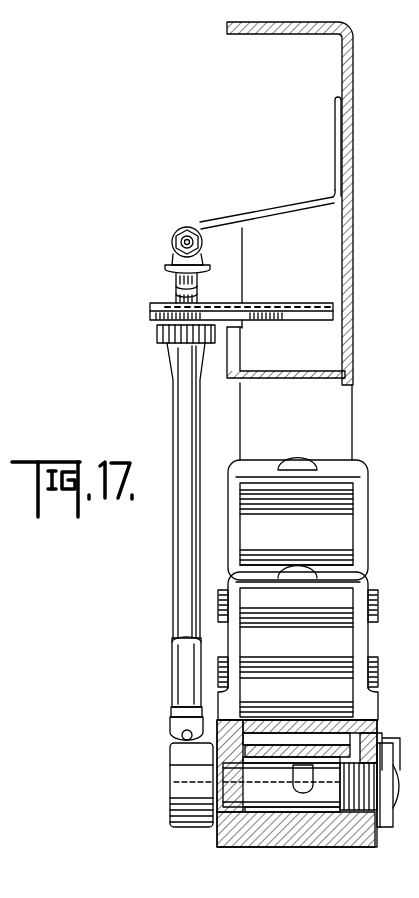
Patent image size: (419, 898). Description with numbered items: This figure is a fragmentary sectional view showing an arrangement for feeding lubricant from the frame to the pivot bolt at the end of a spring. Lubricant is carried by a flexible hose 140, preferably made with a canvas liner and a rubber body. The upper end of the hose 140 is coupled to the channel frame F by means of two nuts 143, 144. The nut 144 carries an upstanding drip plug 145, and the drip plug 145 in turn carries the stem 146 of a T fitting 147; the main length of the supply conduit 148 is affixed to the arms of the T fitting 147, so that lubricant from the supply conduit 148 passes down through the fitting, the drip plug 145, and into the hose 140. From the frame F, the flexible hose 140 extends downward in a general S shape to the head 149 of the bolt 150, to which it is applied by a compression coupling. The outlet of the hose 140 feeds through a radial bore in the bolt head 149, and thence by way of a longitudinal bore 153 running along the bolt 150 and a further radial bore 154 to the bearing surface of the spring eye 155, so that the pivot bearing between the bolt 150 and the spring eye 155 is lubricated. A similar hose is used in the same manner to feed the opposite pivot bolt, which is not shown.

The channel frame F is at (355, 258).
The T fitting 147 is at (200, 207).
The supply conduit 148 is at (172, 240).
The stem 146 is at (163, 267).
The drip plug 145 is at (175, 287).
The nut 144 is at (150, 310).
The nut 143 is at (157, 333).
The flexible hose 140 is at (177, 573).
The head 149 is at (182, 763).
The longitudinal bore 153 is at (190, 777).
The bolt 150 is at (218, 828).
The spring eye 155 is at (286, 832).
The radial bore 154 is at (313, 786).